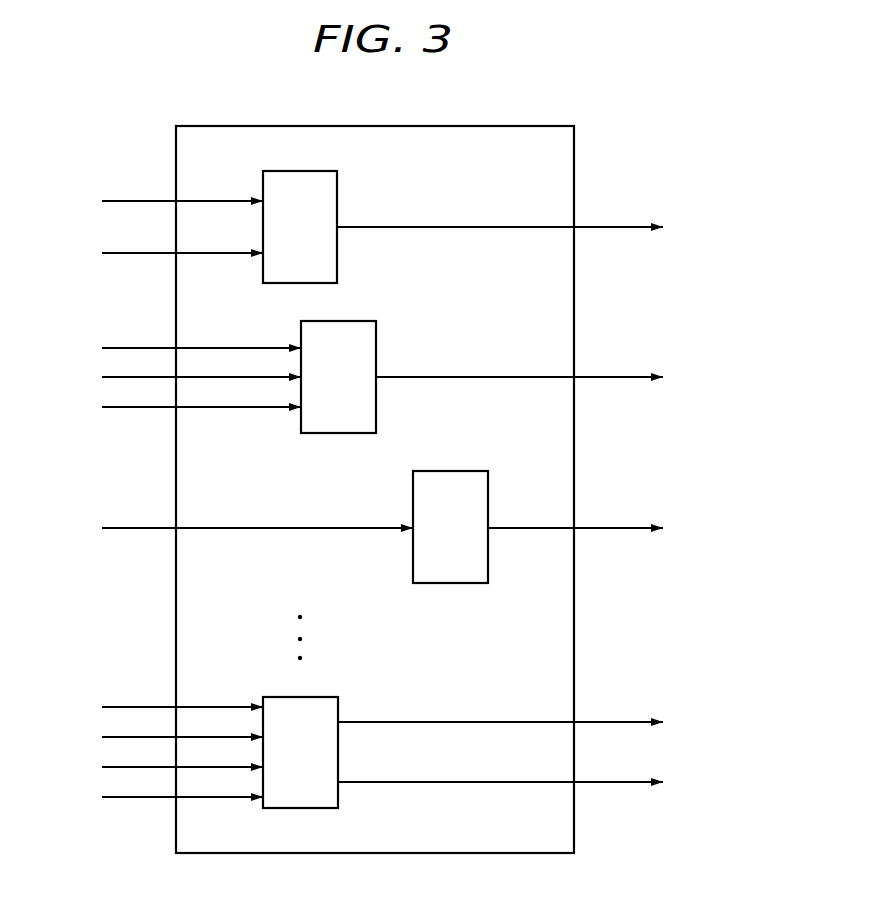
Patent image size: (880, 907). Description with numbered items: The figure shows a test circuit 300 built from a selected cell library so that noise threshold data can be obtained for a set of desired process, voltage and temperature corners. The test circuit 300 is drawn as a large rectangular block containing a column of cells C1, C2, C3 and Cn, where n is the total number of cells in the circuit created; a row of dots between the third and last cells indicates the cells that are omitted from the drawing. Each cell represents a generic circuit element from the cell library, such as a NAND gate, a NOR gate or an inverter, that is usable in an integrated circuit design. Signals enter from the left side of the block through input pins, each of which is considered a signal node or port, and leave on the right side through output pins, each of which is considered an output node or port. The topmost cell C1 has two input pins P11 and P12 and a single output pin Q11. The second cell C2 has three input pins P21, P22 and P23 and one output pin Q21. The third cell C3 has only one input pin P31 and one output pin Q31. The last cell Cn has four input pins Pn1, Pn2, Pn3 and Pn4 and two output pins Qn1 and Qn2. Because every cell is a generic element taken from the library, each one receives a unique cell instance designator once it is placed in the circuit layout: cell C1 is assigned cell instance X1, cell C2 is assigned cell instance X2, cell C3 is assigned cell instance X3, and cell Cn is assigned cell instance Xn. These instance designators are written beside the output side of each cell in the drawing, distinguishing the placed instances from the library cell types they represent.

The test circuit 300 is at (473, 125).
The cell C1 is at (300, 227).
The cell C2 is at (338, 377).
The cell C3 is at (450, 527).
The cell Cn is at (300, 752).
The input pin P11 is at (160, 200).
The input pin P12 is at (160, 252).
The input pin P21 is at (179, 347).
The input pin P22 is at (179, 376).
The input pin P23 is at (179, 406).
The input pin P31 is at (235, 527).
The input pin Pn1 is at (160, 706).
The input pin Pn2 is at (160, 736).
The input pin Pn3 is at (160, 766).
The input pin Pn4 is at (160, 796).
The cell instance X1 is at (500, 209).
The cell instance X2 is at (519, 359).
The cell instance X3 is at (575, 510).
The cell instance Xn is at (500, 704).
The output pin Q11 is at (691, 227).
The output pin Q21 is at (691, 377).
The output pin Q31 is at (691, 527).
The output pin Qn1 is at (691, 721).
The output pin Qn2 is at (523, 781).